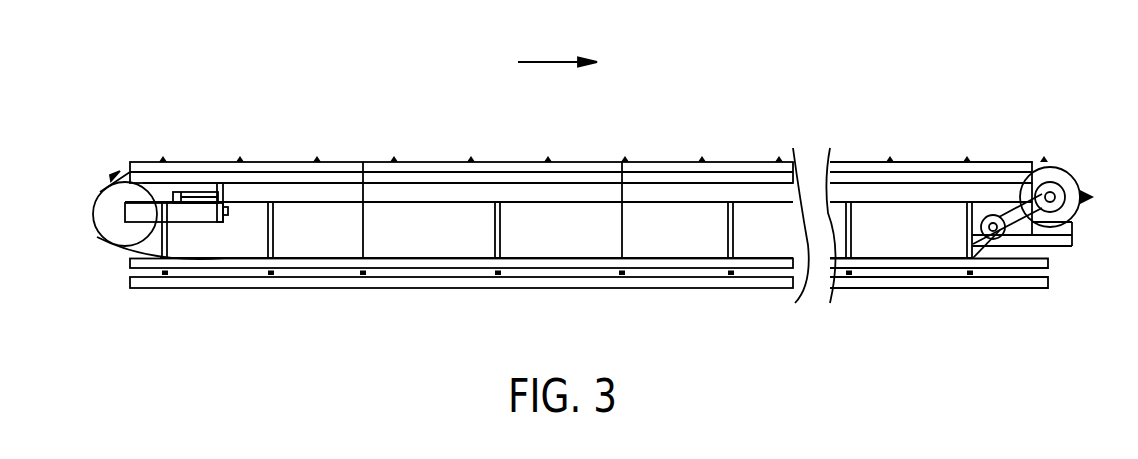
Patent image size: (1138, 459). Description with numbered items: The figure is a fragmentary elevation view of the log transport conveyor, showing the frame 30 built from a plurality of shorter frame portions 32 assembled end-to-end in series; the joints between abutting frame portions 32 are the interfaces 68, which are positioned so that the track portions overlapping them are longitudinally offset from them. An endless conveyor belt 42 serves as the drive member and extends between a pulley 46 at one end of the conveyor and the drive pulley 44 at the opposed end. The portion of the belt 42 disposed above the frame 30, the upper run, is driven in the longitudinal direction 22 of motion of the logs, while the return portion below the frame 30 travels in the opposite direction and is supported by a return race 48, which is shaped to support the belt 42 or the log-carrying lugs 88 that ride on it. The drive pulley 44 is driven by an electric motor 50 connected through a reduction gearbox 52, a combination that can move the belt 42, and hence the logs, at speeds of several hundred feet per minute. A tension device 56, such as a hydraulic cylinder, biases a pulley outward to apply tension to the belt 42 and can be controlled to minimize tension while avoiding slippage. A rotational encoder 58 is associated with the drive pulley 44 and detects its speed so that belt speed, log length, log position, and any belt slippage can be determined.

The longitudinal direction 22 is at (547, 62).
The frame 30 is at (328, 195).
The frame portions 32 is at (298, 160).
The conveyor belt 42 is at (453, 260).
The drive pulley 44 is at (1057, 163).
The pulley 46 is at (107, 205).
The return race 48 is at (237, 270).
The electric motor 50 is at (1003, 235).
The reduction gearbox 52 is at (1067, 185).
The tension device 56 is at (200, 192).
The rotational encoder 58 is at (997, 234).
The interfaces 68 is at (365, 177).
The log-carrying lug 88 is at (472, 158).